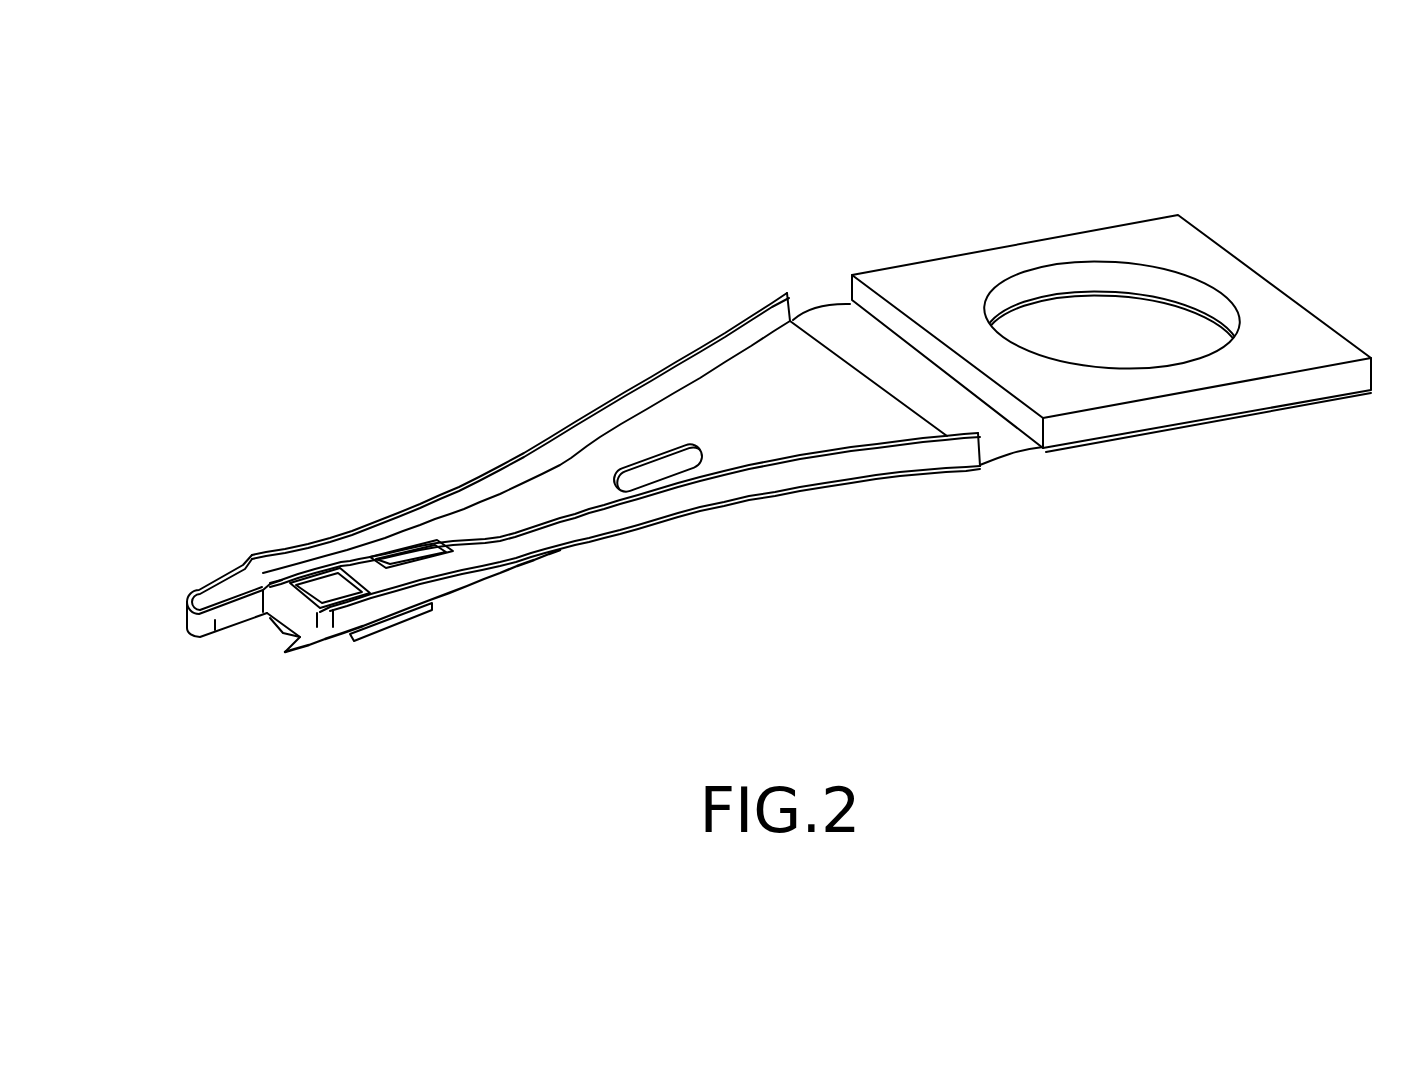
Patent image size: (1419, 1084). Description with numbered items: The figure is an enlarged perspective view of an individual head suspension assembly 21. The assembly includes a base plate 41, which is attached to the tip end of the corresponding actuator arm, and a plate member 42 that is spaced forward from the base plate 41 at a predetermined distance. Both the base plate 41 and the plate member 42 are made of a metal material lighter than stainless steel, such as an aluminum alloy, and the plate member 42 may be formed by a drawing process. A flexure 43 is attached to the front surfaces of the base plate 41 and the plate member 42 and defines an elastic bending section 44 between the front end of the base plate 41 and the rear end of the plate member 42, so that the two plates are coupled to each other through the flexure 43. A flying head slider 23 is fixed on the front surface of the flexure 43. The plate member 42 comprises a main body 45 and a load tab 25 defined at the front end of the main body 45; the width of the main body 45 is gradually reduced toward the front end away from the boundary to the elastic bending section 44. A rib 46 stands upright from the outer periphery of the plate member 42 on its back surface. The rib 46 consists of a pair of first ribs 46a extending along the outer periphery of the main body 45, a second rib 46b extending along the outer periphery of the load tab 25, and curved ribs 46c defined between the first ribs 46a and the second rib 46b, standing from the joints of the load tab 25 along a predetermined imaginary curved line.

The head suspension assembly 21 is at (587, 330).
The flying head slider 23 is at (410, 617).
The load tab 25 is at (197, 637).
The base plate 41 is at (1325, 330).
The plate member 42 is at (612, 540).
The flexure 43 is at (285, 655).
The elastic bending section 44 is at (1016, 458).
The main body 45 is at (770, 348).
The rib 46 is at (507, 458).
The first ribs 46a is at (711, 347).
The second rib 46b is at (195, 593).
The curved ribs 46c is at (249, 563).